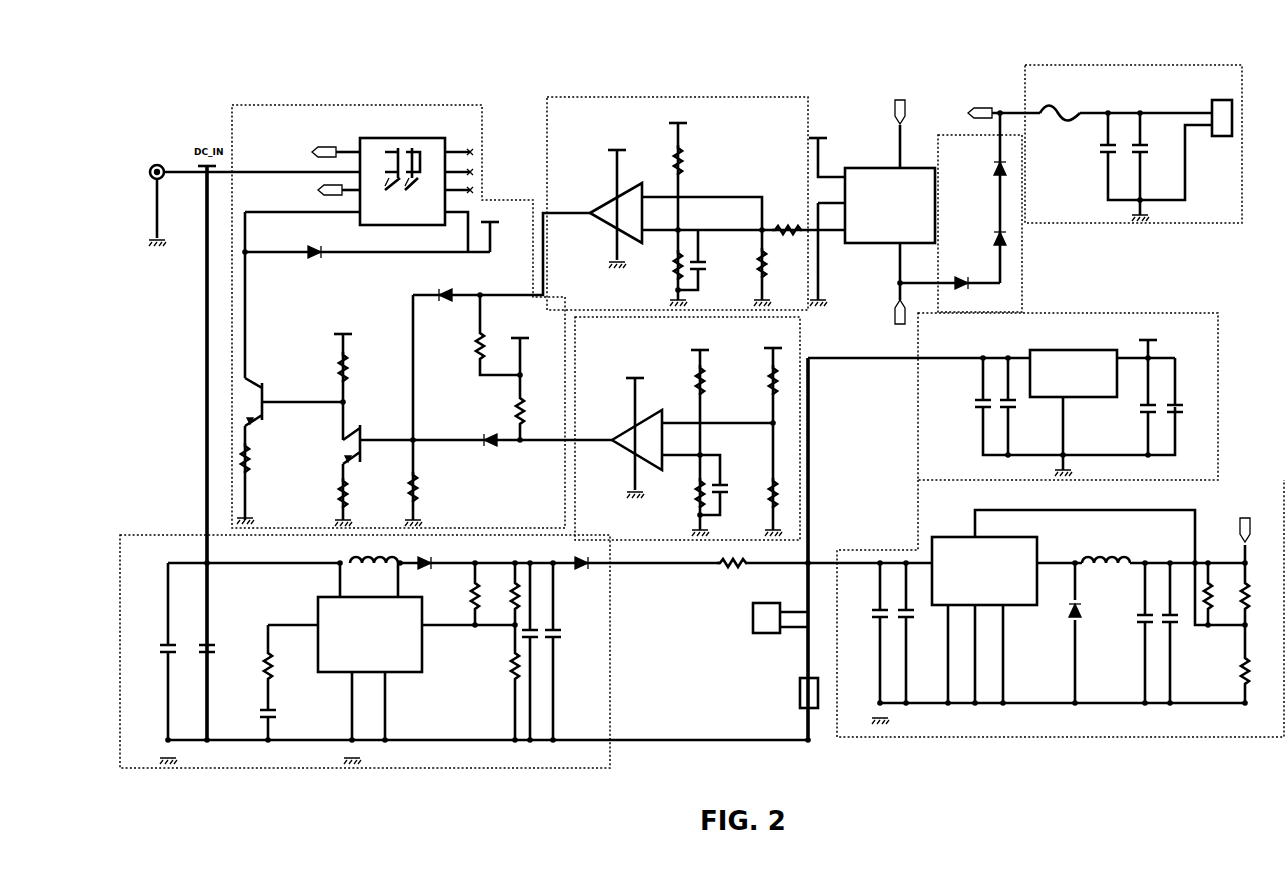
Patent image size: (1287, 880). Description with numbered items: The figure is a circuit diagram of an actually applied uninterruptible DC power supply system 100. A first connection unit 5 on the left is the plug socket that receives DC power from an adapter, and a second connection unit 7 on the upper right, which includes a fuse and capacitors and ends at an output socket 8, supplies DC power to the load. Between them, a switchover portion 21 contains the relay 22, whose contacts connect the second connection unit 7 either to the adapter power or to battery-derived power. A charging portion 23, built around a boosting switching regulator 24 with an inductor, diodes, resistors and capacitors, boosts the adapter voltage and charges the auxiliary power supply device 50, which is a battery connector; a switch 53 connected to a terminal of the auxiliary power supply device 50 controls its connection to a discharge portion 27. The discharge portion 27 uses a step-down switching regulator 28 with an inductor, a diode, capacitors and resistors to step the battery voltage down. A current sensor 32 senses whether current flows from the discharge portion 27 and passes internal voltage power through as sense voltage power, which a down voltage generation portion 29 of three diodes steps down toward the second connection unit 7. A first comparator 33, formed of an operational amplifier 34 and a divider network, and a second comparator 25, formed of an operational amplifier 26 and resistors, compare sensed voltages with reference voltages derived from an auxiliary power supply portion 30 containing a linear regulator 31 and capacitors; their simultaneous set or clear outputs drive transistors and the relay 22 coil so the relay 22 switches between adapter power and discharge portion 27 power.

The uninterruptible DC power supply system 100 is at (770, 50).
The first connection unit 5 is at (152, 164).
The second connection unit 7 is at (1178, 73).
The output connector J2 8 is at (1232, 100).
The switchover portion 21 is at (486, 118).
The relay 22 is at (397, 136).
The charging portion 23 is at (140, 532).
The boosting switching regulator 24 is at (316, 598).
The second comparator 25 is at (808, 348).
The operational amplifier 26 is at (630, 426).
The discharge portion 27 is at (914, 504).
The step-down switching regulator 28 is at (1000, 537).
The down voltage generation portion 29 is at (1018, 262).
The auxiliary power supply portion 30 is at (1220, 326).
The linear regulator 31 is at (1080, 350).
The current sensor 32 is at (876, 164).
The first comparator 33 is at (600, 95).
The operational amplifier 34 is at (610, 204).
The auxiliary power supply device 50 is at (778, 602).
The switch 53 is at (798, 692).